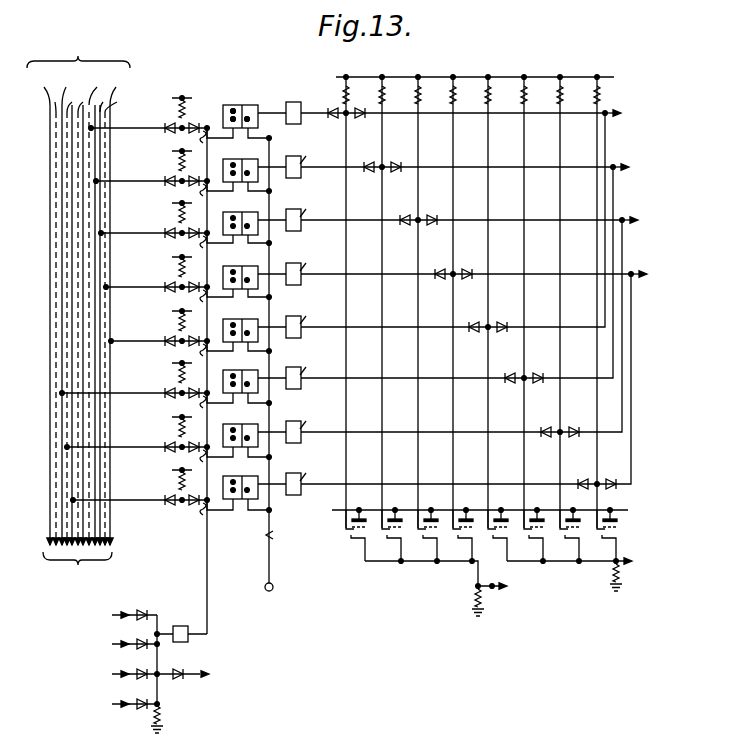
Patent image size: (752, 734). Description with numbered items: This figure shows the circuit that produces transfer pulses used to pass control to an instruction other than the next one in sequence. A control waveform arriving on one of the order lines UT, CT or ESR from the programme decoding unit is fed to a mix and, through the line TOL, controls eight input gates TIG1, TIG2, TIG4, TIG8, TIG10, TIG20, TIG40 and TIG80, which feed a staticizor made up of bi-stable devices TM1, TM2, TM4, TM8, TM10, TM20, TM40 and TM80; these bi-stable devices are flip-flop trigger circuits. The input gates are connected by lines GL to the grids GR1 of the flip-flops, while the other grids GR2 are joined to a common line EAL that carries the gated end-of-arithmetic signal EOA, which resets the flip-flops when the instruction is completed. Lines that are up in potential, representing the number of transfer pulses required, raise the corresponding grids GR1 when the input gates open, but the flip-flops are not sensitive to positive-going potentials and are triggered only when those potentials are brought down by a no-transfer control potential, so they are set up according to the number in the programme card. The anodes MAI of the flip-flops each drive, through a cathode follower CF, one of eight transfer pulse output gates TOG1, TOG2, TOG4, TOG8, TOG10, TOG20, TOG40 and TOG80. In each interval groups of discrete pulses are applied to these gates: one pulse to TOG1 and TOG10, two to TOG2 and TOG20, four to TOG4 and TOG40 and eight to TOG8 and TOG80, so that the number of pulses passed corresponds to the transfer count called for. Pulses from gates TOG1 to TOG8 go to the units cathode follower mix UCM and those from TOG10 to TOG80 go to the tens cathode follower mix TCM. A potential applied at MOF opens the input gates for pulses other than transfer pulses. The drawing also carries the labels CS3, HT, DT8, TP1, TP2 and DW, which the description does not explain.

The cable from MPU / SRU CS3 is at (62, 154).
The high tension supply line HT is at (493, 289).
The input gate TIG1 is at (168, 123).
The input gate TIG2 is at (163, 168).
The input gate TIG4 is at (168, 228).
The input gate TIG8 is at (168, 282).
The input gate TIG10 is at (168, 336).
The input gate TIG20 is at (168, 388).
The input gate TIG40 is at (168, 442).
The input gate TIG80 is at (168, 495).
The line GL is at (201, 177).
The bi-stable device TM1 is at (275, 111).
The bi-stable device TM2 is at (248, 163).
The bi-stable device TM4 is at (248, 216).
The bi-stable device TM8 is at (248, 270).
The bi-stable device TM10 is at (248, 323).
The bi-stable device TM20 is at (248, 374).
The bi-stable device TM40 is at (248, 428).
The bi-stable device TM80 is at (248, 480).
The cathode follower CF is at (300, 110).
The anode MAI is at (232, 109).
The grid GR1 is at (234, 118).
The grid GR2 is at (248, 118).
The transfer pulse output gate TOG1 is at (489, 290).
The transfer pulse output gate TOG2 is at (377, 159).
The transfer pulse output gate TOG4 is at (413, 213).
The transfer pulse output gate TOG8 is at (448, 267).
The transfer pulse output gate TOG10 is at (499, 318).
The transfer pulse output gate TOG20 is at (536, 369).
The transfer pulse output gate TOG40 is at (571, 423).
The transfer pulse output gate TOG80 is at (605, 476).
The delay tube output DT8 is at (641, 117).
The units cathode follower mix UCM is at (418, 569).
The tens cathode follower mix TCM is at (588, 571).
The test point 1 TP1 is at (492, 588).
The test point 2 TP2 is at (628, 566).
The line TOL is at (204, 597).
The line EAL is at (286, 535).
The gated end-of-arithmetic signal EOA is at (278, 386).
The order line UT is at (121, 616).
The order line CT is at (122, 645).
The order line ESR is at (116, 675).
The potential input MOF is at (116, 714).
The DW output DW is at (200, 675).